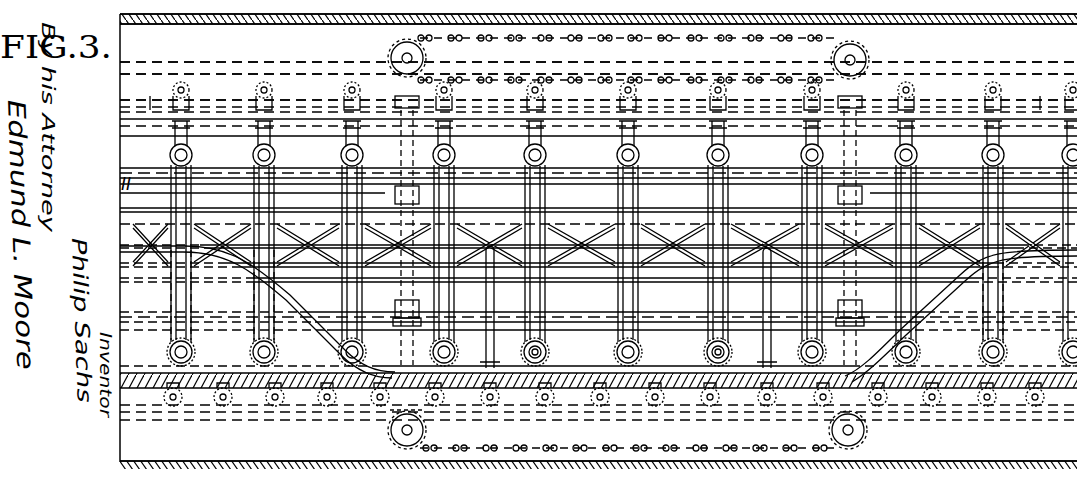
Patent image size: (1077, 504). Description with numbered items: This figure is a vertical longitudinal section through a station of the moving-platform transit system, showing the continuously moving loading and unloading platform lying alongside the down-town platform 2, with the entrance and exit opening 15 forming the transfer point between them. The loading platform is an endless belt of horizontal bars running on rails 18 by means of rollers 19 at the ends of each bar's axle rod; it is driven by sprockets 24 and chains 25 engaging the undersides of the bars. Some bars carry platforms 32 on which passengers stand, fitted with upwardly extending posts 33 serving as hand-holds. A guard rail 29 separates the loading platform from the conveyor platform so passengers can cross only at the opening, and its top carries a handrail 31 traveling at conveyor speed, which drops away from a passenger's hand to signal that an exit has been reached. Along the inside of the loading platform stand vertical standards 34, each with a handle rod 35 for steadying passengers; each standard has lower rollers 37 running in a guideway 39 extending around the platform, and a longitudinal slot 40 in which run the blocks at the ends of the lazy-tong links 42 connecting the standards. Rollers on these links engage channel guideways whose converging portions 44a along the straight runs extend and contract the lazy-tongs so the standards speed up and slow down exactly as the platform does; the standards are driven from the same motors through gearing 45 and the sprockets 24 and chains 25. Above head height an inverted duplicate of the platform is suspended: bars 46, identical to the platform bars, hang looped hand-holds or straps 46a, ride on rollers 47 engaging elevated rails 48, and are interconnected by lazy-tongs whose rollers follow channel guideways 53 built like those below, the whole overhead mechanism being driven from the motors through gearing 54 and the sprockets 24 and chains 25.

The down-town platform 2 is at (1010, 16).
The entrance and exit opening 15 is at (598, 368).
The rails 18 is at (247, 406).
The rollers 19 is at (222, 402).
The sprockets 24 is at (428, 432).
The chains 25 is at (590, 44).
The guard rail 29 is at (520, 0).
The handrail 31 is at (598, 13).
The platforms 32 is at (638, 354).
The posts 33 is at (230, 285).
The vertical standards 34 is at (168, 166).
The handle rod 35 is at (340, 156).
The rollers 37 is at (548, 353).
The guideway 39 is at (688, 330).
The longitudinal slot 40 is at (470, 178).
The lazy-tong links 42 is at (236, 228).
The converging portions of guideways 44a is at (314, 210).
The gearing 45 is at (390, 426).
The bars 46 is at (270, 106).
The looped hand-holds or straps 46a is at (642, 156).
The rollers 47 is at (190, 90).
The elevated rails 48 is at (592, 94).
The channel guideways 53 is at (230, 66).
The gearing 54 is at (390, 62).